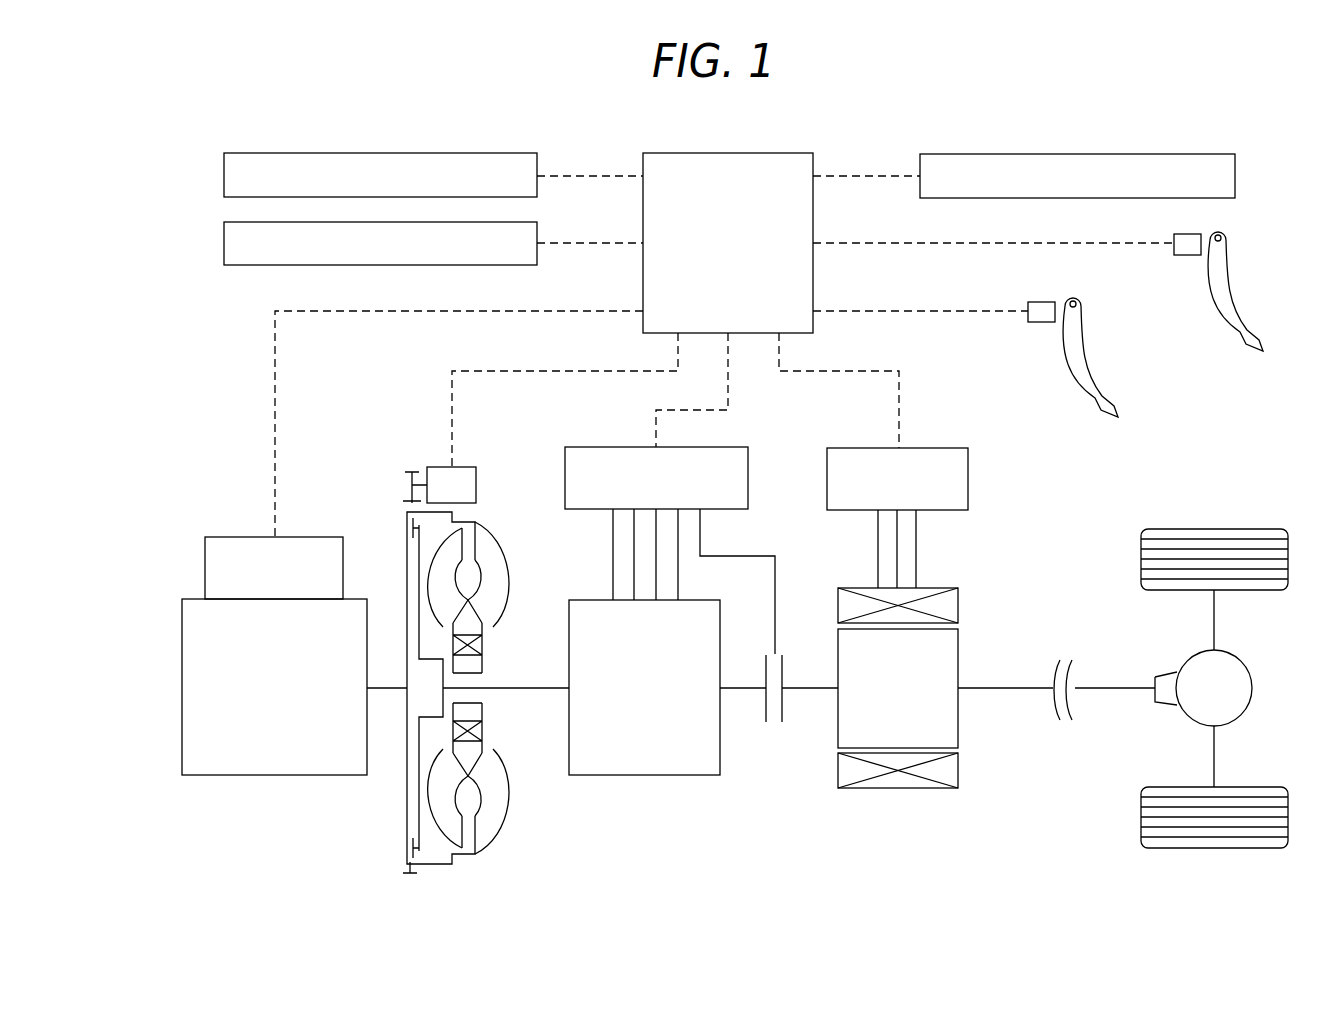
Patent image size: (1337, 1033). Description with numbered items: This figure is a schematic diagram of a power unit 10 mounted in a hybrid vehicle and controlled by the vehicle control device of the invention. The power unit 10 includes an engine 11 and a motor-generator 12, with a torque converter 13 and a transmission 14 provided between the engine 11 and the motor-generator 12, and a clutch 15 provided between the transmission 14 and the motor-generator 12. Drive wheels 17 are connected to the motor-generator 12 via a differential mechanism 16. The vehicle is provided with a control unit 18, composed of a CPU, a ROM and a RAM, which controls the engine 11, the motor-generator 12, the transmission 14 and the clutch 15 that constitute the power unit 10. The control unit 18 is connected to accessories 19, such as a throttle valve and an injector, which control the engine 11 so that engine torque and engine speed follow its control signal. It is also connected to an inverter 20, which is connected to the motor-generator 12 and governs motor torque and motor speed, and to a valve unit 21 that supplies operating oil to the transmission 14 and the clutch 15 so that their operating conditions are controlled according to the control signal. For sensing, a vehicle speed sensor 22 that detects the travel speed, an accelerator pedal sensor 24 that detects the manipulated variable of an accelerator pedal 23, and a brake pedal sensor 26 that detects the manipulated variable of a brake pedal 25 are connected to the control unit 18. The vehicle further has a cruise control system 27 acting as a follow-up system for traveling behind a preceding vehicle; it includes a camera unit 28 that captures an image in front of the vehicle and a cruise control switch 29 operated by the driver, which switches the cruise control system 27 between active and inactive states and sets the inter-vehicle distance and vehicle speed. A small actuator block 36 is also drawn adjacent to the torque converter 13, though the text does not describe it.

The power unit 10 is at (210, 432).
The engine 11 is at (187, 598).
The motor-generator 12 is at (963, 598).
The torque converter 13 is at (487, 525).
The transmission 14 is at (575, 600).
The clutch 15 is at (787, 643).
The differential mechanism 16 is at (1245, 660).
The drive wheels 17 is at (1268, 529).
The control unit 18 is at (797, 153).
The accessories 19 is at (300, 537).
The inverter 20 is at (943, 448).
The valve unit 21 is at (585, 447).
The vehicle speed sensor 22 is at (1235, 172).
The accelerator pedal 23 is at (1230, 287).
The accelerator pedal sensor 24 is at (1187, 255).
The brake pedal 25 is at (1082, 353).
The brake pedal sensor 26 is at (1043, 322).
The cruise control system 27 is at (278, 118).
The camera unit 28 is at (224, 167).
The cruise control switch 29 is at (224, 235).
The clutch actuator 36 is at (437, 467).